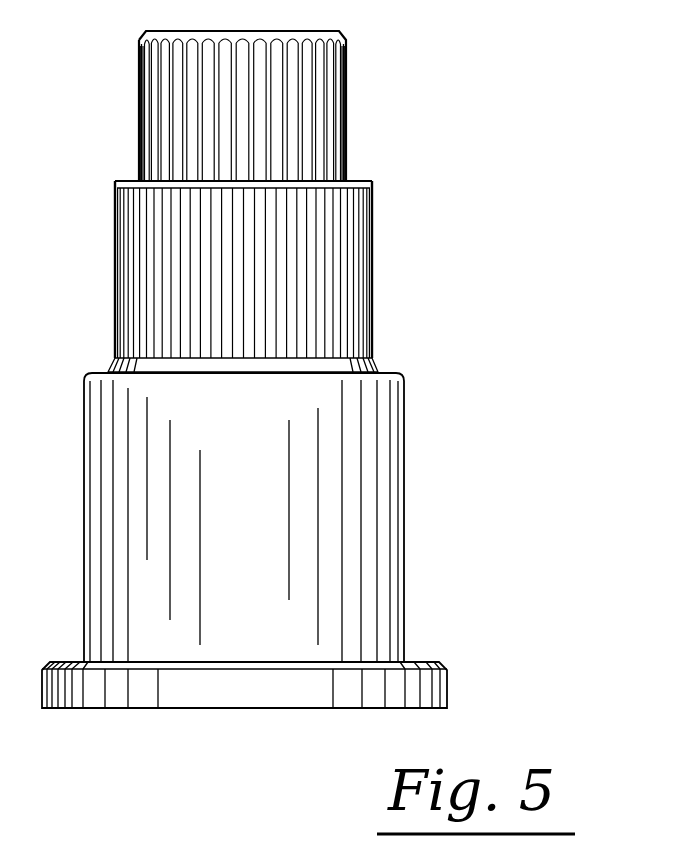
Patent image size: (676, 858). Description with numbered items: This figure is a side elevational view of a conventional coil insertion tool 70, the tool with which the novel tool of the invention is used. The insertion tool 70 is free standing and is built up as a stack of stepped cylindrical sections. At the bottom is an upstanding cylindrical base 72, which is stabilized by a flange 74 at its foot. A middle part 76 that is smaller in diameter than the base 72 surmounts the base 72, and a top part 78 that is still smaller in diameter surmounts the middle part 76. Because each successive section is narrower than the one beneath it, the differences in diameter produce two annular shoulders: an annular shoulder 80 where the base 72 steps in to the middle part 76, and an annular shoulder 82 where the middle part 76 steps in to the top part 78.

The coil insertion tool 70 is at (457, 141).
The cylindrical base 72 is at (398, 531).
The flange 74 is at (448, 682).
The middle part 76 is at (367, 262).
The top part 78 is at (156, 122).
The annular shoulder 80 is at (397, 372).
The annular shoulder 82 is at (357, 183).